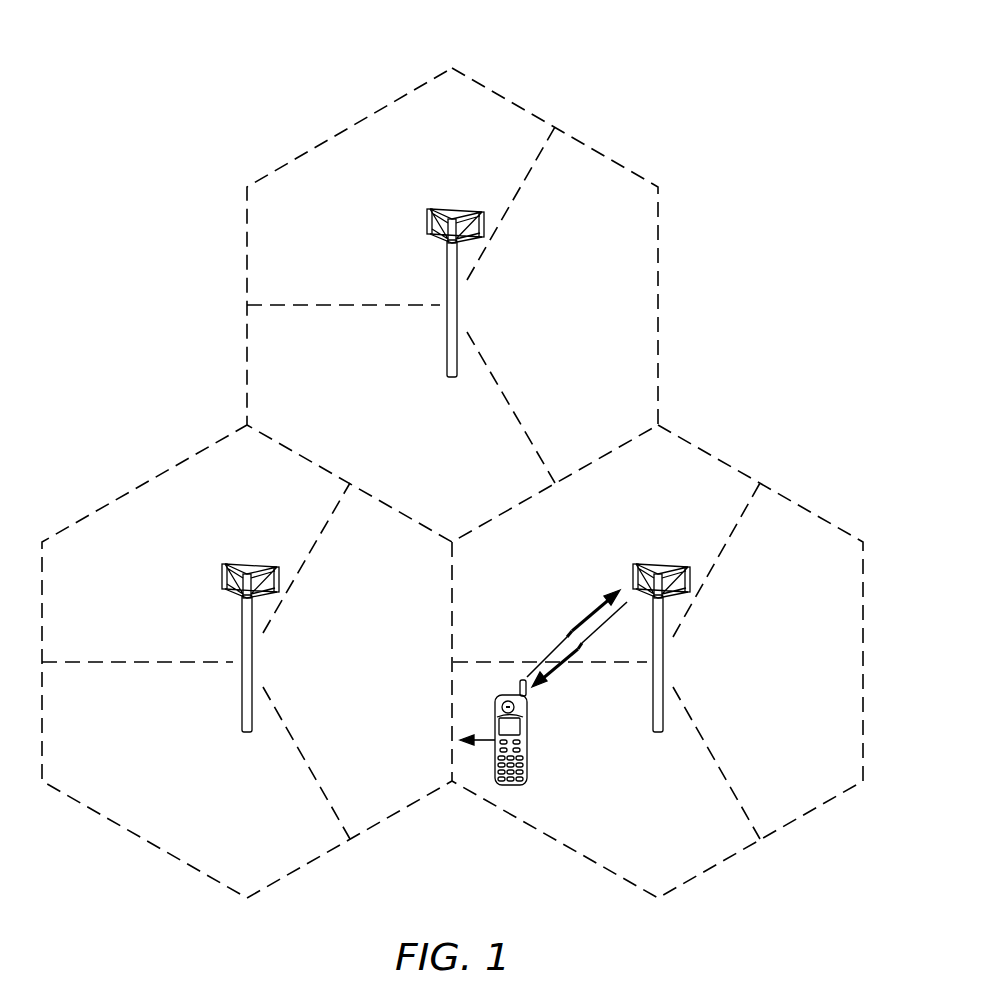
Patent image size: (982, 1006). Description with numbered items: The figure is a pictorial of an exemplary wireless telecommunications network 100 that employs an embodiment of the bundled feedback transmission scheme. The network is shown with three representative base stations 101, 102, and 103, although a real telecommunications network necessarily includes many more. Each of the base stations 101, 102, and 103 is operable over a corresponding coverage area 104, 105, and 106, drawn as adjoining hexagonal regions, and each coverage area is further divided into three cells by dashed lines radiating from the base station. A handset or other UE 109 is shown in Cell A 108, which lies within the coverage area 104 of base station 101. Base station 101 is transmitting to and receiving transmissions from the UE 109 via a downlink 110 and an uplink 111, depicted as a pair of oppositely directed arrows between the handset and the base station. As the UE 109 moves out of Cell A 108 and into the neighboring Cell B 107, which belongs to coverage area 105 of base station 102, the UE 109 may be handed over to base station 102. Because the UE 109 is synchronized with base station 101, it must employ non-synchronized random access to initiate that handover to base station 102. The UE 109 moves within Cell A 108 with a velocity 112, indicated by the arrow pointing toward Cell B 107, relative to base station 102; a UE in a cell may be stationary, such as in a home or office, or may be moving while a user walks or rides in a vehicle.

The wireless telecommunications network 100 is at (643, 81).
The base station 101 is at (663, 660).
The base station 102 is at (242, 692).
The base station 103 is at (447, 336).
The coverage area 104 is at (798, 817).
The coverage area 105 is at (144, 838).
The coverage area 106 is at (658, 306).
The Cell B 107 is at (404, 778).
The Cell A 108 is at (666, 849).
The UE 109 is at (527, 749).
The downlink 110 is at (582, 648).
The uplink 111 is at (592, 609).
The velocity 112 is at (483, 741).